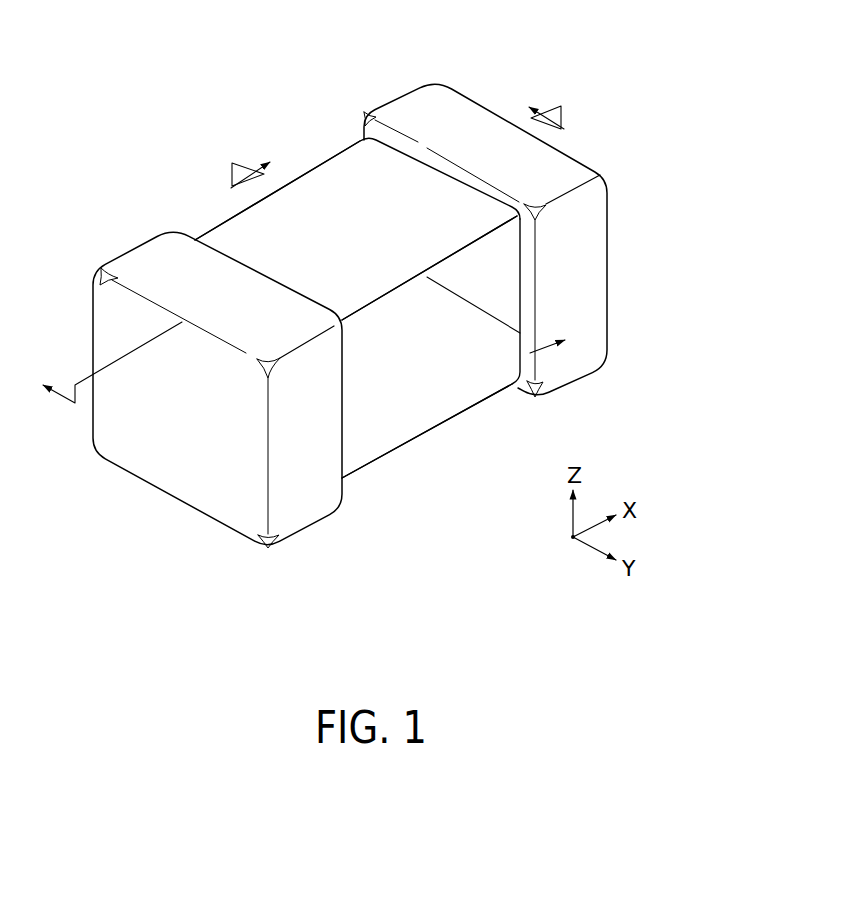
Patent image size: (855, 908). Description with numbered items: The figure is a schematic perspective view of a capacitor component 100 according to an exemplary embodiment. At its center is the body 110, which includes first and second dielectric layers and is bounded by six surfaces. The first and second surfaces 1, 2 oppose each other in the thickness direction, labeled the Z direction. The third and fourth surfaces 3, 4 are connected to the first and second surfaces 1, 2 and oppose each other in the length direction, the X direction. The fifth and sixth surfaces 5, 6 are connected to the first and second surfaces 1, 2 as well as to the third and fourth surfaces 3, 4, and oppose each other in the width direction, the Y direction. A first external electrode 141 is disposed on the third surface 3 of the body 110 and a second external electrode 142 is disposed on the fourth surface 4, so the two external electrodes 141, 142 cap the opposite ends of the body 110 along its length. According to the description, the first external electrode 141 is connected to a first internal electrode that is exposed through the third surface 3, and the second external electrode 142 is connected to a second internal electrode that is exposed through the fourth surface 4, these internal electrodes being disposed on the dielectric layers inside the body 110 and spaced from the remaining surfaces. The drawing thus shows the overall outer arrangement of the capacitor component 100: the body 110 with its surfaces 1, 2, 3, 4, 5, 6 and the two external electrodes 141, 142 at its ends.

The capacitor component 100 is at (152, 88).
The body 110 is at (250, 233).
The first external electrode 141 is at (152, 263).
The second external electrode 142 is at (408, 114).
The first surface 1 is at (391, 400).
The second surface 2 is at (366, 191).
The third surface 3 is at (186, 447).
The fourth surface 4 is at (559, 251).
The fifth surface 5 is at (450, 370).
The sixth surface 6 is at (313, 218).